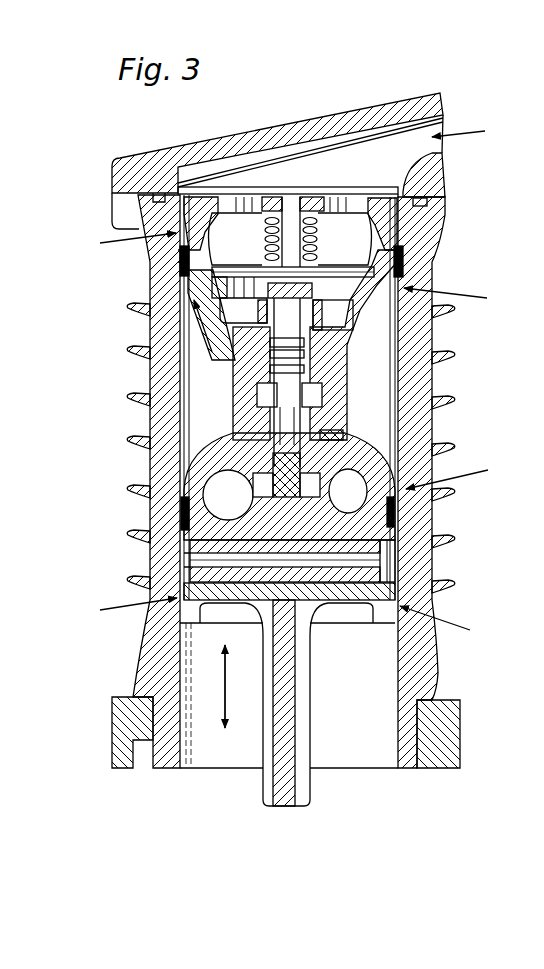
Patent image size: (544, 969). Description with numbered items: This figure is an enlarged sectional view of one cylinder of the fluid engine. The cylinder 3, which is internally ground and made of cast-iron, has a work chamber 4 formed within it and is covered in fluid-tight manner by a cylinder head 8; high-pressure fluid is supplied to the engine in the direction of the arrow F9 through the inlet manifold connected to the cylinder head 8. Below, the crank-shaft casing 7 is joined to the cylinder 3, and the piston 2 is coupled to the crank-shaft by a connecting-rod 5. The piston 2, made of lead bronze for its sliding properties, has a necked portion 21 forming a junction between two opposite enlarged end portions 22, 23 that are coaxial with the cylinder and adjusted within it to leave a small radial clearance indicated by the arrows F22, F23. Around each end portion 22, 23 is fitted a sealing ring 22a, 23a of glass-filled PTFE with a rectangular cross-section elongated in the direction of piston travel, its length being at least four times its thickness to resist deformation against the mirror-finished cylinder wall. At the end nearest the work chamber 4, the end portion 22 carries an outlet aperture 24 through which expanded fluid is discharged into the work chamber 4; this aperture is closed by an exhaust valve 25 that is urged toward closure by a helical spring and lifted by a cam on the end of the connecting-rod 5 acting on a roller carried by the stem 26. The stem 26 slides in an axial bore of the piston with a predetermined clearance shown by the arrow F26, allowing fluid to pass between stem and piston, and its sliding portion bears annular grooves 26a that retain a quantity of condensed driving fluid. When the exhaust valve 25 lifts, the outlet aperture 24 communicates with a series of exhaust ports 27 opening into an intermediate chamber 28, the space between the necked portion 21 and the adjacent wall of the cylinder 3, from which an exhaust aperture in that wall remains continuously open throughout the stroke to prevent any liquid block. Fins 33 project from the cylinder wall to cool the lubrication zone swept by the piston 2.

The piston 2 is at (356, 627).
The cylinder 3 is at (452, 242).
The work chamber 4 is at (237, 168).
The connecting-rod 5 is at (306, 737).
The casing 7 is at (448, 732).
The cylinder head 8 is at (360, 120).
The direction of fluid supply F9 is at (458, 121).
The necked portion 21 is at (246, 424).
The enlarged end portion 22 is at (205, 317).
The sealing ring 22a is at (183, 262).
The radial clearance F22 is at (294, 270).
The enlarged end portion 23 is at (186, 473).
The sealing ring 23a is at (183, 510).
The radial clearance F23 is at (295, 550).
The outlet aperture 24 is at (333, 232).
The exhaust valve 25 is at (249, 252).
The stem 26 is at (288, 398).
The annular grooves 26a is at (256, 394).
The stem clearance F26 is at (209, 337).
The exhaust ports 27 is at (282, 303).
The intermediate chamber 28 is at (392, 413).
The fins 33 is at (455, 356).